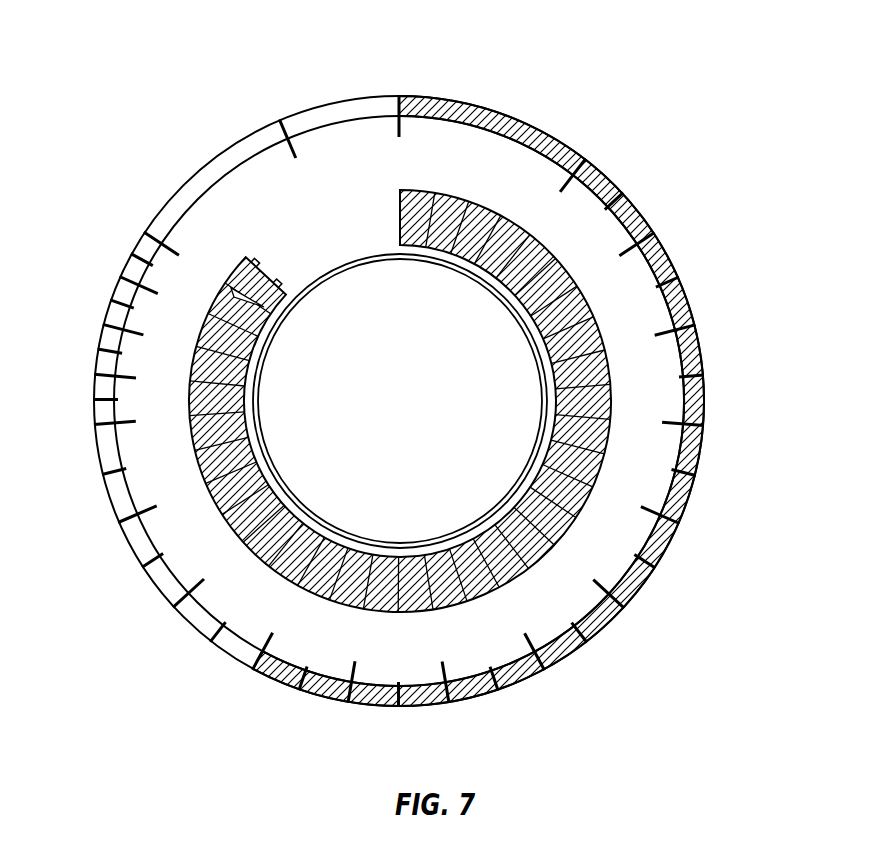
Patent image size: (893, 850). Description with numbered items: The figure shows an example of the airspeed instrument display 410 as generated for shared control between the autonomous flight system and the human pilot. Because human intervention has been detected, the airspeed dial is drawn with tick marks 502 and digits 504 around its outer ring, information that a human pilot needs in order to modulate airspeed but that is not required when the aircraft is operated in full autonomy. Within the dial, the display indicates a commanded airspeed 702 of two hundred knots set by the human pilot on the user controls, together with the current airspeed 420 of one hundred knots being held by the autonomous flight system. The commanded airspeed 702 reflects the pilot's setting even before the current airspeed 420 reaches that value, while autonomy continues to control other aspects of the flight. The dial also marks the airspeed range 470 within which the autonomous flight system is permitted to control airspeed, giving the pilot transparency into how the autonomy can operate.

The airspeed instrument display 410 is at (119, 97).
The commanded airspeed 702 is at (376, 296).
The tick marks 502 is at (123, 275).
The digits 504 is at (215, 575).
The current airspeed 420 is at (522, 583).
The airspeed range 470 is at (610, 632).